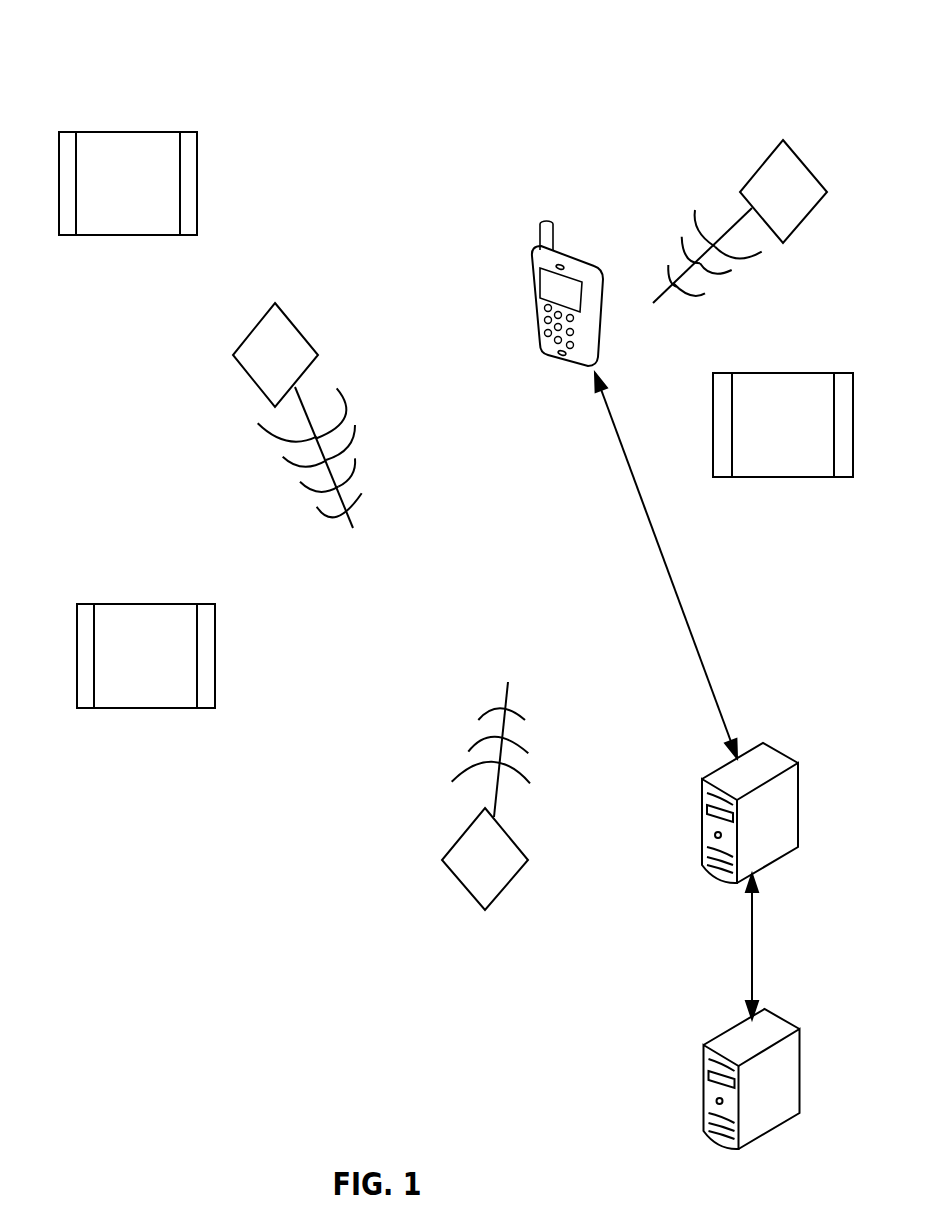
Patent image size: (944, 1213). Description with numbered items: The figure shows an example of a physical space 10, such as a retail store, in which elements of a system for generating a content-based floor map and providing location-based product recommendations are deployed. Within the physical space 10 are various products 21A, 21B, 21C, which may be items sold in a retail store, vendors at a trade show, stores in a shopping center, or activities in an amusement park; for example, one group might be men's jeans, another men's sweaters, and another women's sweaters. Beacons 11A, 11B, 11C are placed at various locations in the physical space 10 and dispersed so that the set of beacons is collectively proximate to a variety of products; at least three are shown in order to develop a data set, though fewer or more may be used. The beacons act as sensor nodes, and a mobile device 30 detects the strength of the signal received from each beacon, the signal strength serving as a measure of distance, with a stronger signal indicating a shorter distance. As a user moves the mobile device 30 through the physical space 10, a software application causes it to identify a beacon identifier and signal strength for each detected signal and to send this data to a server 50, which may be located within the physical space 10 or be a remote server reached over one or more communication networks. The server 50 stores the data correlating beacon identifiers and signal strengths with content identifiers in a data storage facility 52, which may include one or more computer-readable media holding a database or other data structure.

The physical space 10 is at (335, 80).
The beacon 11A is at (297, 415).
The beacon 11B is at (740, 221).
The beacon 11C is at (486, 796).
The product 21A is at (128, 183).
The product 21B is at (146, 656).
The product 21C is at (783, 425).
The mobile device 30 is at (585, 374).
The server 50 is at (702, 827).
The data storage facility 52 is at (703, 1087).